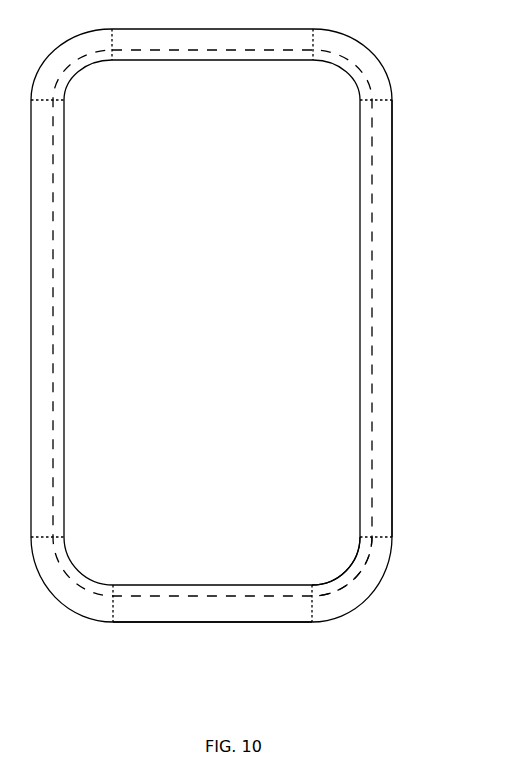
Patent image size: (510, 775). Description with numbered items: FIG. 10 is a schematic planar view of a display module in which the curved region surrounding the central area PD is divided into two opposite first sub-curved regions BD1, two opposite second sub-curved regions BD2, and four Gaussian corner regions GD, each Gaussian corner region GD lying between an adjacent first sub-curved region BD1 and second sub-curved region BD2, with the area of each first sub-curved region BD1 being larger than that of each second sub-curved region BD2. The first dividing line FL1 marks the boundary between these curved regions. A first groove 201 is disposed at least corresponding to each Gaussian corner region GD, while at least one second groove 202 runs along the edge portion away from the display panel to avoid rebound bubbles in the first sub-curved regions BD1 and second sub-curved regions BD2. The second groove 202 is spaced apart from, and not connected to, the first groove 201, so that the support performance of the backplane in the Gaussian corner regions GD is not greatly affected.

The second groove 202 is at (372, 300).
The pixel display region PD is at (330, 378).
The first sub-curved region BD1 is at (380, 430).
The second sub-curved region BD2 is at (210, 605).
The first groove 201 is at (358, 573).
The Gaussian corner region GD is at (357, 590).
The first dividing line FL1 is at (308, 610).